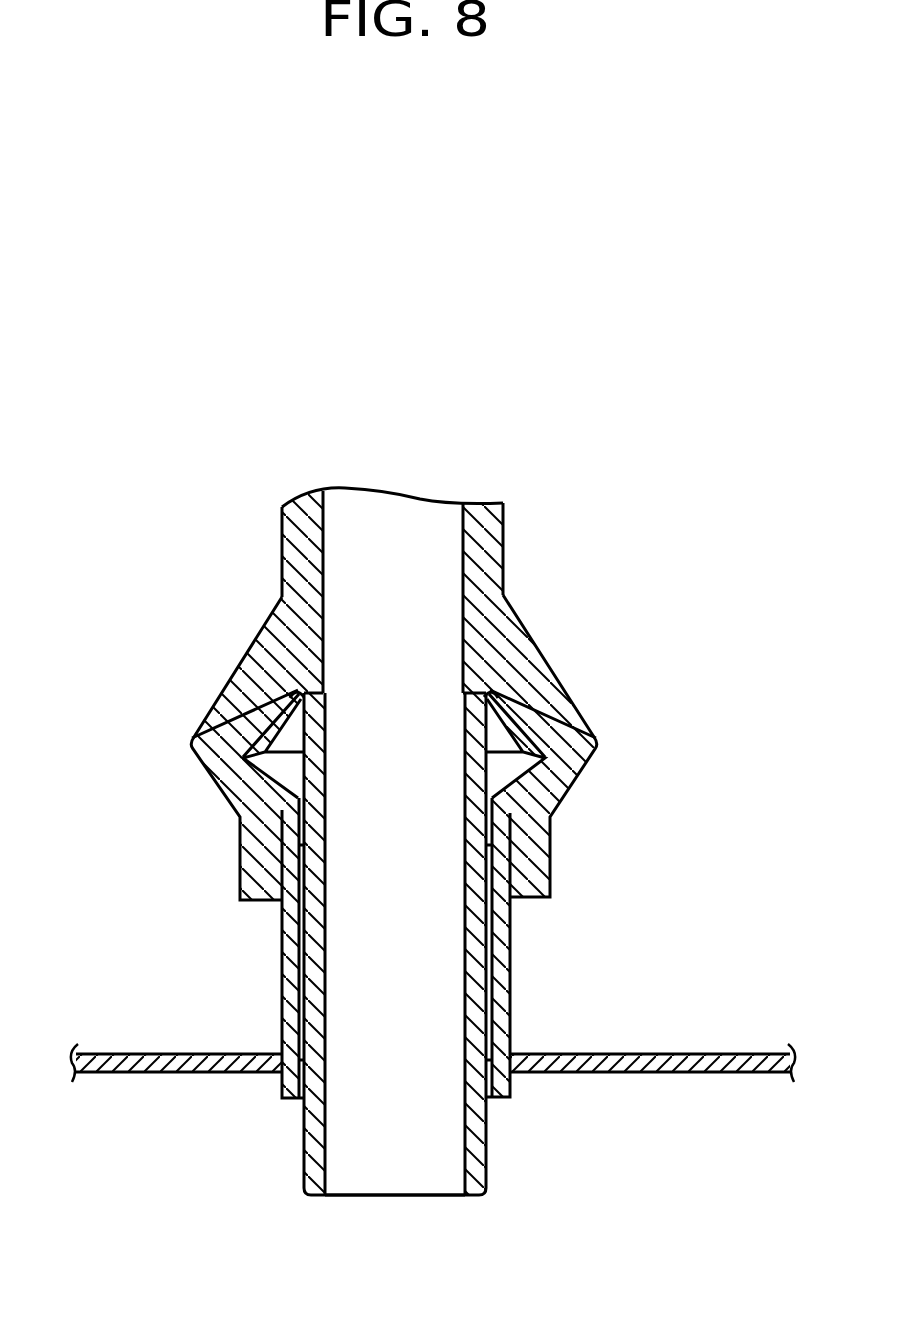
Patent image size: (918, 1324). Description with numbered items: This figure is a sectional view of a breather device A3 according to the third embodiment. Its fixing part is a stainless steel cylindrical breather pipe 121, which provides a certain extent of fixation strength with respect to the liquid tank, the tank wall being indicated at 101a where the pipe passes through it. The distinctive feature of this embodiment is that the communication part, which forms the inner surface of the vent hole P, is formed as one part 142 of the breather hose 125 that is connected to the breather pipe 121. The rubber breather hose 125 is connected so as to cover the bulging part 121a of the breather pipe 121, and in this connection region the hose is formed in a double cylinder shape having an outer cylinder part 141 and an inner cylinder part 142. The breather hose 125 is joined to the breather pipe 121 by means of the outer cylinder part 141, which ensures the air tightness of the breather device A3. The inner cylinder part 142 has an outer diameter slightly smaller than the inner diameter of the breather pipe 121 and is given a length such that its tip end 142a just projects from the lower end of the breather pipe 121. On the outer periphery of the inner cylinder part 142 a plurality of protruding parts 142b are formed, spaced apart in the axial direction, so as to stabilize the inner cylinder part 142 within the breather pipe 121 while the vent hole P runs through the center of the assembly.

The breather device A3 is at (186, 513).
The breather hose 125 is at (503, 541).
The outer cylinder part 141 is at (548, 823).
The breather pipe 121 is at (512, 914).
The bulging part 121a is at (538, 692).
The inner cylinder part 142 is at (490, 994).
The tip end 142a is at (489, 1132).
The protruding parts 142b is at (490, 845).
The panel 101a is at (712, 1053).
The vent hole P is at (389, 1183).